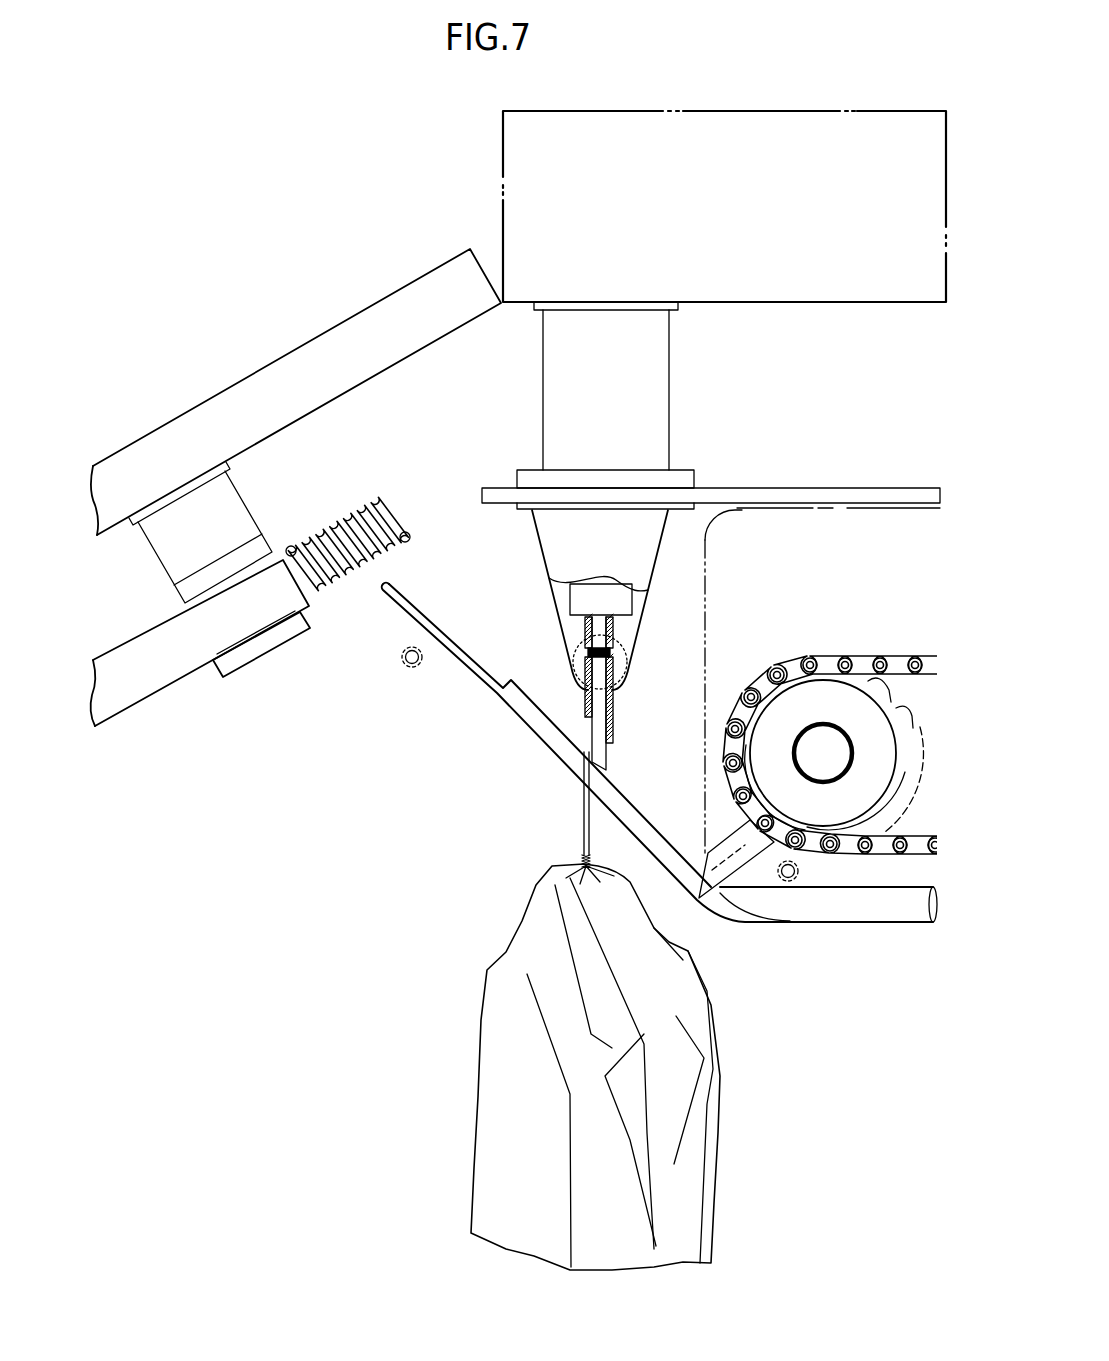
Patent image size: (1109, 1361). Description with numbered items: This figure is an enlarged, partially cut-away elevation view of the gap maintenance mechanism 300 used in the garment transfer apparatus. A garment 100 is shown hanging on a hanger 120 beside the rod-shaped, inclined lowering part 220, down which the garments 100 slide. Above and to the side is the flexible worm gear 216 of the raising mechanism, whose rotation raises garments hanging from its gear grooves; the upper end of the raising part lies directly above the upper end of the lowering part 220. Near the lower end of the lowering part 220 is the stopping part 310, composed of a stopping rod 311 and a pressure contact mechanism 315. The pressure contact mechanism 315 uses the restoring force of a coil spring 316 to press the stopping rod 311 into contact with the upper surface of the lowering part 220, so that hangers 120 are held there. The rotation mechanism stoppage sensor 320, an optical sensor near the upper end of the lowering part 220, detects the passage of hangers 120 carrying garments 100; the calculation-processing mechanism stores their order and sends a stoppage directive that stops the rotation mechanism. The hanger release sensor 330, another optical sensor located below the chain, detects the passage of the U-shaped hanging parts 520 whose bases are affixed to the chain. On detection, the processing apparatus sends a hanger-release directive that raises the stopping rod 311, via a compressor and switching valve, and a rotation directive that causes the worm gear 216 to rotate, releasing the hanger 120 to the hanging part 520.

The garment 100 is at (478, 1023).
The hanger 120 is at (584, 814).
The worm gear 216 is at (338, 576).
The lowering part 220 is at (486, 681).
The gap maintenance mechanism 300 is at (308, 896).
The stopping part 310 is at (636, 535).
The stopping rod 311 is at (607, 758).
The pressure contact mechanism 315 is at (618, 690).
The coil spring 316 is at (613, 638).
The rotation mechanism stoppage sensor 320 is at (410, 668).
The hanger release sensor 330 is at (800, 883).
The hanging part 520 is at (720, 900).